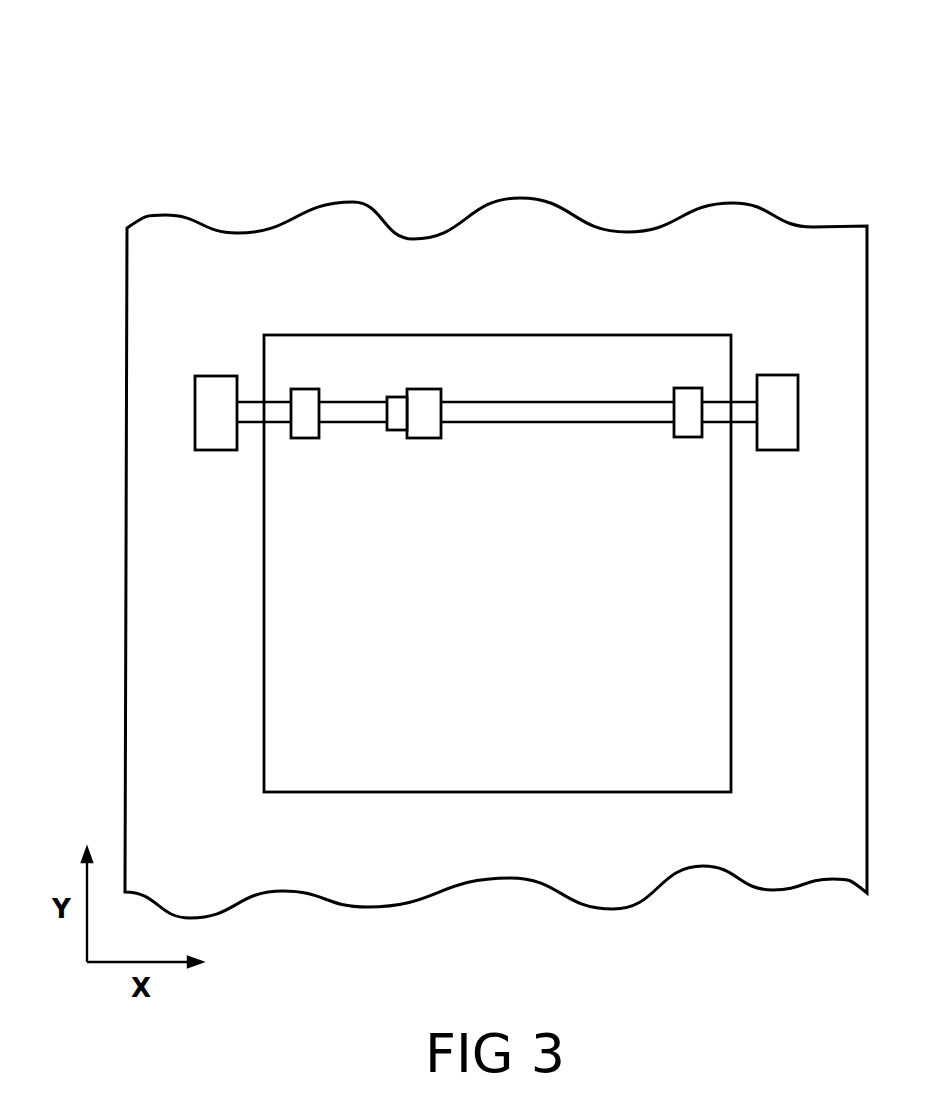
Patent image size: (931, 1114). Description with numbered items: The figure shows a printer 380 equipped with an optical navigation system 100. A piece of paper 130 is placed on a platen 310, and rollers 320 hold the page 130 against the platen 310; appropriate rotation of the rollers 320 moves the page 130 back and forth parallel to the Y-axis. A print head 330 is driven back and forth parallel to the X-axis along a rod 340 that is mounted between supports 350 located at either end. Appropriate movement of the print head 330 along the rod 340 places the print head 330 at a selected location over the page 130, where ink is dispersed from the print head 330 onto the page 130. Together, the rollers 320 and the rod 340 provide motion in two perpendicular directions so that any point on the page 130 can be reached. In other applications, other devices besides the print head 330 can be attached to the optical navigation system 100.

The optical navigation system 100 is at (393, 431).
The piece of paper 130 is at (730, 600).
The platen 310 is at (815, 829).
The rollers 320 is at (304, 389).
The print head 330 is at (427, 389).
The rod 340 is at (568, 424).
The supports 350 is at (220, 376).
The printer 380 is at (750, 96).